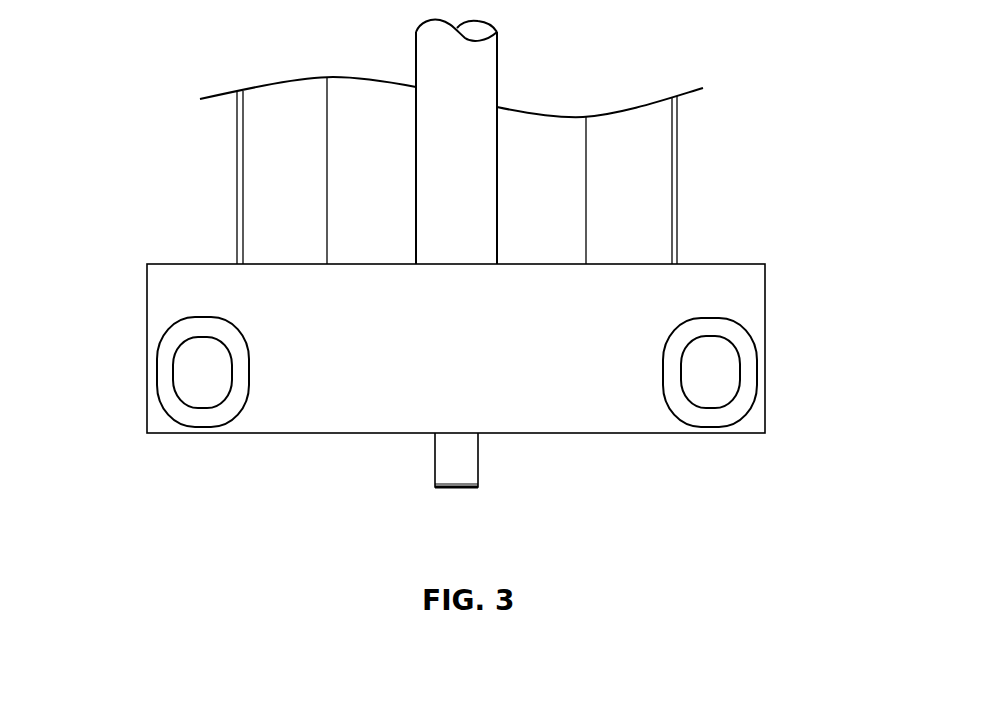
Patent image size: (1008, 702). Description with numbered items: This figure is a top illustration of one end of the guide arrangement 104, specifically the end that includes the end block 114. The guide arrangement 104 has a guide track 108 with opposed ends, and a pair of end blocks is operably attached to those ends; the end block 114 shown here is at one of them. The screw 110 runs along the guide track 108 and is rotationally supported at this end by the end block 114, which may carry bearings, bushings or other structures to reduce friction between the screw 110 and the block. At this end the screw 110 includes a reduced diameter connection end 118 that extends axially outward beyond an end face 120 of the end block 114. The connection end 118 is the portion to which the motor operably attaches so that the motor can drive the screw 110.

The guide arrangement 104 is at (762, 26).
The guide track 108 is at (268, 170).
The screw 110 is at (428, 45).
The end block 114 is at (173, 293).
The connection end 118 is at (447, 459).
The end face 120 is at (190, 433).